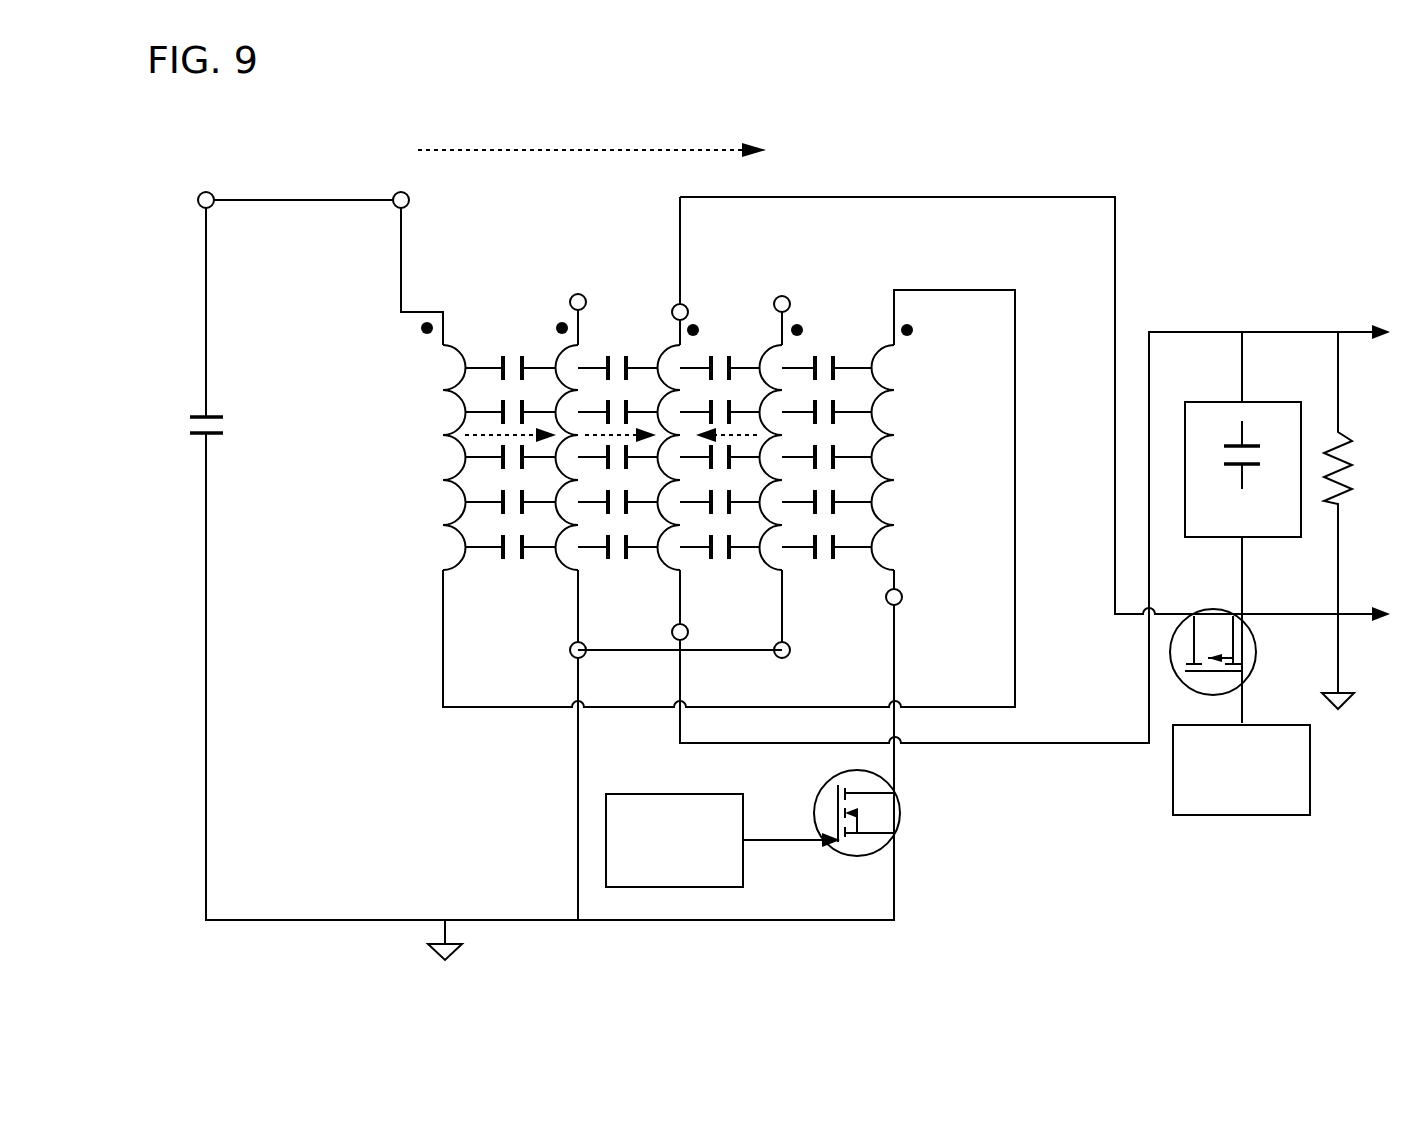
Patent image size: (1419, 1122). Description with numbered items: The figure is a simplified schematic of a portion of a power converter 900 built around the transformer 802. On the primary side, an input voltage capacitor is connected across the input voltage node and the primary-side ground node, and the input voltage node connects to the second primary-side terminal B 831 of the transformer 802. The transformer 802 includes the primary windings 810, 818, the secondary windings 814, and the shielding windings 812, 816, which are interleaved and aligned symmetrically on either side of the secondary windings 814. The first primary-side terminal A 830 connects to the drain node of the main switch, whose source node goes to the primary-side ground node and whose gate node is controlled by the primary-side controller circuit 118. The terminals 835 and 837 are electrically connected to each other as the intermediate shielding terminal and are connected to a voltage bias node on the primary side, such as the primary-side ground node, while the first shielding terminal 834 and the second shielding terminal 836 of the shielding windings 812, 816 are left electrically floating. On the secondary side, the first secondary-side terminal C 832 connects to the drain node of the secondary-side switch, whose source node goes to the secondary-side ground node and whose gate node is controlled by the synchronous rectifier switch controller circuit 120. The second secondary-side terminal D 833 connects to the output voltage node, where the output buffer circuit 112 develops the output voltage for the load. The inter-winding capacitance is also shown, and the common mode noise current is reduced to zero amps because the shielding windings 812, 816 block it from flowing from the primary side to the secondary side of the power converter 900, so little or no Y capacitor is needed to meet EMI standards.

The power converter 900 is at (232, 120).
The second primary-side terminal B 831 is at (394, 192).
The transformer 802 is at (520, 226).
The primary winding 810 is at (440, 478).
The shielding winding 812 is at (556, 352).
The secondary windings 814 is at (667, 352).
The shielding winding 816 is at (770, 352).
The primary winding 818 is at (903, 478).
The first shielding terminal S1 834 is at (583, 294).
The first secondary-side terminal C 832 is at (676, 305).
The second shielding terminal S2 836 is at (783, 296).
The terminal S'1 835 is at (570, 645).
The second secondary-side terminal D 833 is at (688, 632).
The terminal S'2 837 is at (790, 648).
The first primary-side terminal A 830 is at (900, 605).
The output buffer circuit 112 is at (1290, 531).
The primary-side controller circuit 118 is at (737, 876).
The synchronous rectifier switch controller circuit 120 is at (1305, 809).